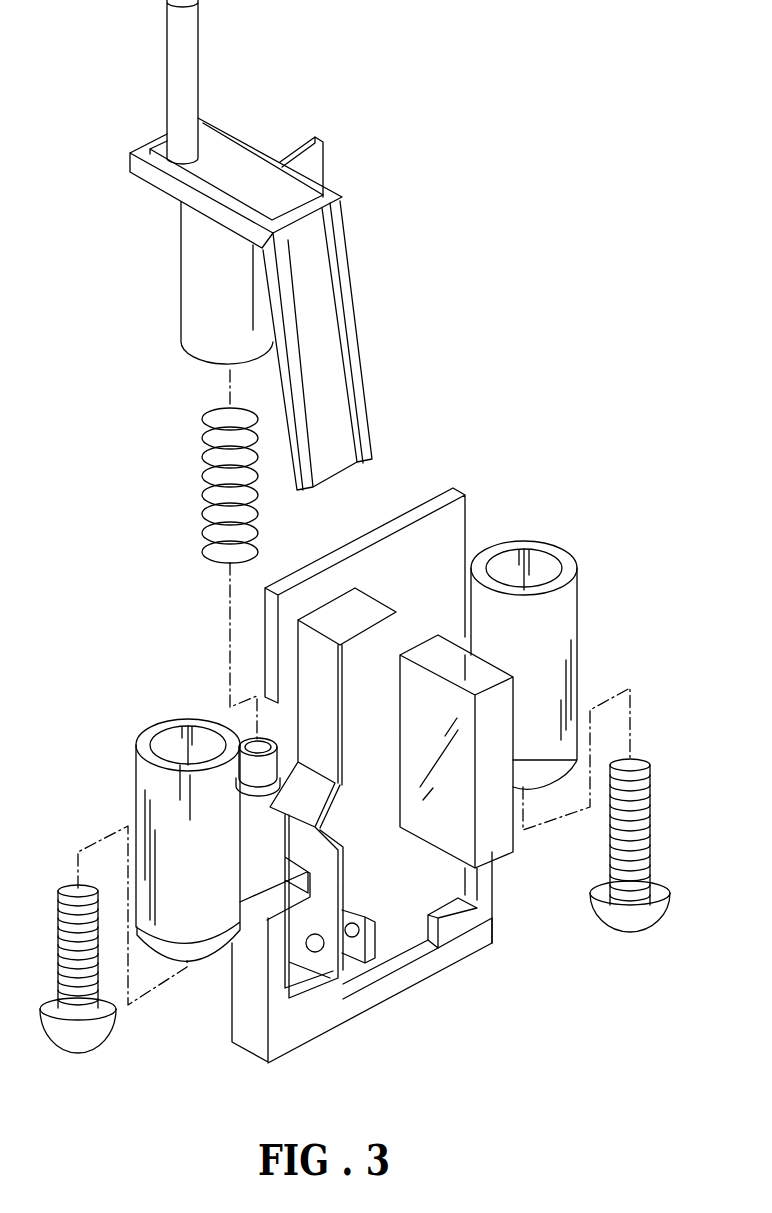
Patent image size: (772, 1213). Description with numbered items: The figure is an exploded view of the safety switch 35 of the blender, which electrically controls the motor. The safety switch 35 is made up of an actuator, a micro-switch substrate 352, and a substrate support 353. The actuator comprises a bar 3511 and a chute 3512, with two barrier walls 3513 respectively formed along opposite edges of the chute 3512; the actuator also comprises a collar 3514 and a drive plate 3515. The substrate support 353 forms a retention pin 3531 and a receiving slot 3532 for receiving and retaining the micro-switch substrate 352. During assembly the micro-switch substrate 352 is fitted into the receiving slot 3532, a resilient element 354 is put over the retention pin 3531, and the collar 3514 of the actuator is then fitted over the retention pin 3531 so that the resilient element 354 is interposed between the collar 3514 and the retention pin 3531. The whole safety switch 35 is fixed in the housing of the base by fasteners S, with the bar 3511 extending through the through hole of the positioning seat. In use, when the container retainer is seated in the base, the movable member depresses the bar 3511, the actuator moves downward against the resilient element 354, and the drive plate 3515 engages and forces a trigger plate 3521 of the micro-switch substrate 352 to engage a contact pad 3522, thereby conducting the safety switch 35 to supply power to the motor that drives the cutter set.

The safety switch 35 is at (565, 208).
The bar 3511 is at (190, 52).
The chute 3512 is at (328, 352).
The barrier walls 3513 is at (342, 232).
The collar 3514 is at (193, 267).
The drive plate 3515 is at (313, 163).
The micro-switch substrate 352 is at (447, 533).
The trigger plate 3521 is at (315, 970).
The contact pad 3522 is at (357, 947).
The substrate support 353 is at (420, 973).
The retention pin 3531 is at (262, 865).
The receiving slot 3532 is at (467, 905).
The resilient element 354 is at (203, 495).
The fasteners S is at (645, 825).